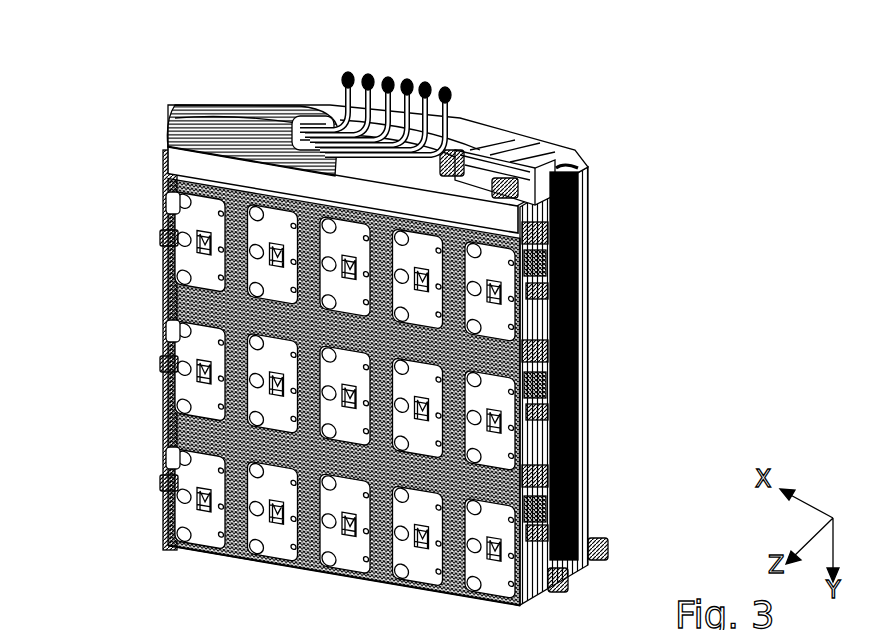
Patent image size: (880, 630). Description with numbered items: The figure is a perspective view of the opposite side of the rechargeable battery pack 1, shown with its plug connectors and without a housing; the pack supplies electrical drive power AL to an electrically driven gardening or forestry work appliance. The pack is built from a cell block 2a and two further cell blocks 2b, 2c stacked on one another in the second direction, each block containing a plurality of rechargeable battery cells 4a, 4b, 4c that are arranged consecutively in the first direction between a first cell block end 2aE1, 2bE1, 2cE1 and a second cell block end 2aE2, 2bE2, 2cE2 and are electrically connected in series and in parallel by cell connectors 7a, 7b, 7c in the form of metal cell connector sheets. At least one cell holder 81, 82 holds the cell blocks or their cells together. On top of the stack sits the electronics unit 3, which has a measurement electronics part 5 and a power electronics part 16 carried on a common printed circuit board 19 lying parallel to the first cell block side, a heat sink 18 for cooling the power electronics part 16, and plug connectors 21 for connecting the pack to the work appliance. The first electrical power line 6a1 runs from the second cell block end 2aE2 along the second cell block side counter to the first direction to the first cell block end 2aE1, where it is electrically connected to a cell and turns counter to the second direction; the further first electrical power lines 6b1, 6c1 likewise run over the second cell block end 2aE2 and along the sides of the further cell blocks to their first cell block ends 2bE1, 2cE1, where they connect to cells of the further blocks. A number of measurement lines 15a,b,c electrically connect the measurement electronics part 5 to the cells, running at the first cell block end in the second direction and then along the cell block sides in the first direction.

The rechargeable battery pack 1 is at (391, 308).
The heat sink 18 is at (242, 112).
The power electronics part 16 is at (302, 112).
The plug connectors 21 is at (341, 80).
The electrical drive power AL is at (446, 88).
The common printed circuit board 19 is at (460, 152).
The electronics unit 3 is at (478, 172).
The measurement electronics part 5 is at (505, 185).
The measurement lines 15a,b,c is at (582, 213).
The cell connector 7a is at (587, 243).
The first electrical power line 6a1 is at (580, 260).
The first cell block end 2aE1 is at (587, 293).
The cell connector 7b is at (600, 357).
The further first electrical power line 6b1 is at (597, 385).
The first cell block end 2bE1 is at (600, 412).
The cell connector 7c is at (600, 483).
The further first electrical power line 6c1 is at (600, 512).
The first cell block end 2cE1 is at (595, 525).
The cell holder 81 is at (597, 547).
The cell holder 82 is at (565, 583).
The rechargeable battery cells 4a is at (172, 202).
The cell block 2a is at (178, 215).
The second cell block end 2aE2 is at (167, 235).
The rechargeable battery cells 4b is at (173, 330).
The further cell block 2b is at (178, 341).
The second cell block end 2bE2 is at (167, 358).
The rechargeable battery cells 4c is at (177, 453).
The further cell block 2c is at (200, 466).
The second cell block end 2cE2 is at (160, 480).